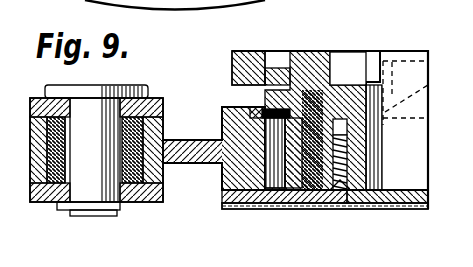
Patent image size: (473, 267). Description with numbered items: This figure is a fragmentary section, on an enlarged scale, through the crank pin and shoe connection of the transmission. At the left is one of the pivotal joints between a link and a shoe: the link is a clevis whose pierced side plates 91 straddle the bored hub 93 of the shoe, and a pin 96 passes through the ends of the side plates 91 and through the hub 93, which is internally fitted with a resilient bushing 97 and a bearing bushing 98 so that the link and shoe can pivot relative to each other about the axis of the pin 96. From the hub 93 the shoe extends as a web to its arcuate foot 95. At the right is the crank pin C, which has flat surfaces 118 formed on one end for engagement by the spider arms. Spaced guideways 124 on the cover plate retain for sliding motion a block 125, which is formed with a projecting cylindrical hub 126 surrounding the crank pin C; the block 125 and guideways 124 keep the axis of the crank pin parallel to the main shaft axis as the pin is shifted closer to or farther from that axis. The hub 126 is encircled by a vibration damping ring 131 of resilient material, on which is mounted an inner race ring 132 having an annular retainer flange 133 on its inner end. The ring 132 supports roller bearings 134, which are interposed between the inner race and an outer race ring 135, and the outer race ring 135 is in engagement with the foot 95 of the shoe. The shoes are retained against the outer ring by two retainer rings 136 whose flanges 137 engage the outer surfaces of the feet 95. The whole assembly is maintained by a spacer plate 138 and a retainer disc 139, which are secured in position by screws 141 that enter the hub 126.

The side plates 91 is at (33, 103).
The bored hub 93 is at (33, 130).
The pins 96 is at (52, 92).
The resilient bushings 97 is at (50, 158).
The bearing bushings 98 is at (64, 147).
The arcuate foot 95 is at (237, 140).
The flanges 137 is at (240, 195).
The flat surfaces 118 is at (378, 62).
The guideways 124 is at (247, 60).
The annular retainer flange 133 is at (277, 70).
The block 125 is at (306, 85).
The cylindrical hub 126 is at (335, 100).
The roller bearings 134 is at (273, 204).
The inner race ring 132 is at (300, 204).
The outer race ring 135 is at (252, 204).
The vibration damping ring 131 is at (340, 204).
The screws 141 is at (373, 204).
The spacer plate 138 is at (412, 204).
The retainer rings 136 is at (228, 204).
The retainer disc 139 is at (428, 203).
The crank pin C is at (405, 145).